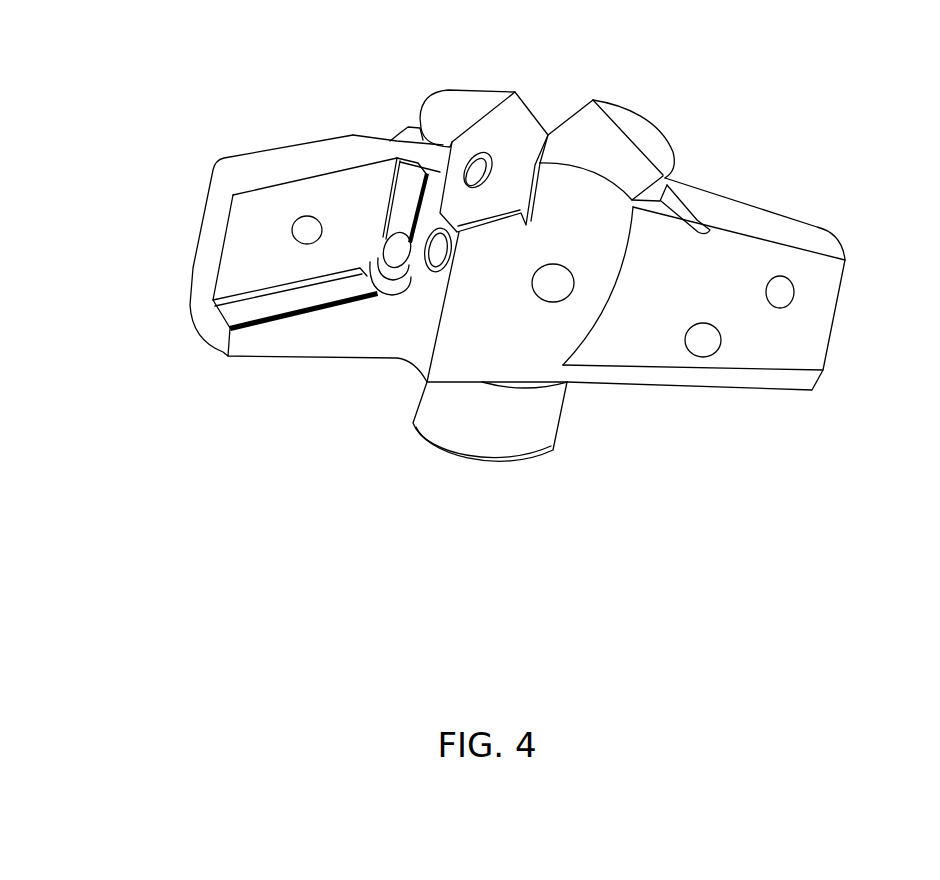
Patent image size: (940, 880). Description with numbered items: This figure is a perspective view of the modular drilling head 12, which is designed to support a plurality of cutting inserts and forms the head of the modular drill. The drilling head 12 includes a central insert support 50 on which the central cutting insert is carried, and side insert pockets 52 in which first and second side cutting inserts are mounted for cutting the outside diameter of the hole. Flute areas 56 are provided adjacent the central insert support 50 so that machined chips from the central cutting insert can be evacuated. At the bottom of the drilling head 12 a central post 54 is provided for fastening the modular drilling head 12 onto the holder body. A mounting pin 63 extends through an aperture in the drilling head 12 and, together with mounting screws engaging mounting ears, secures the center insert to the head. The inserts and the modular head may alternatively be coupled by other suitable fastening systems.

The drilling head 12 is at (740, 168).
The central insert support 50 is at (597, 140).
The side insert pockets 52 is at (258, 220).
The central post 54 is at (562, 420).
The flute areas 56 is at (484, 325).
The mounting pin 63 is at (520, 195).